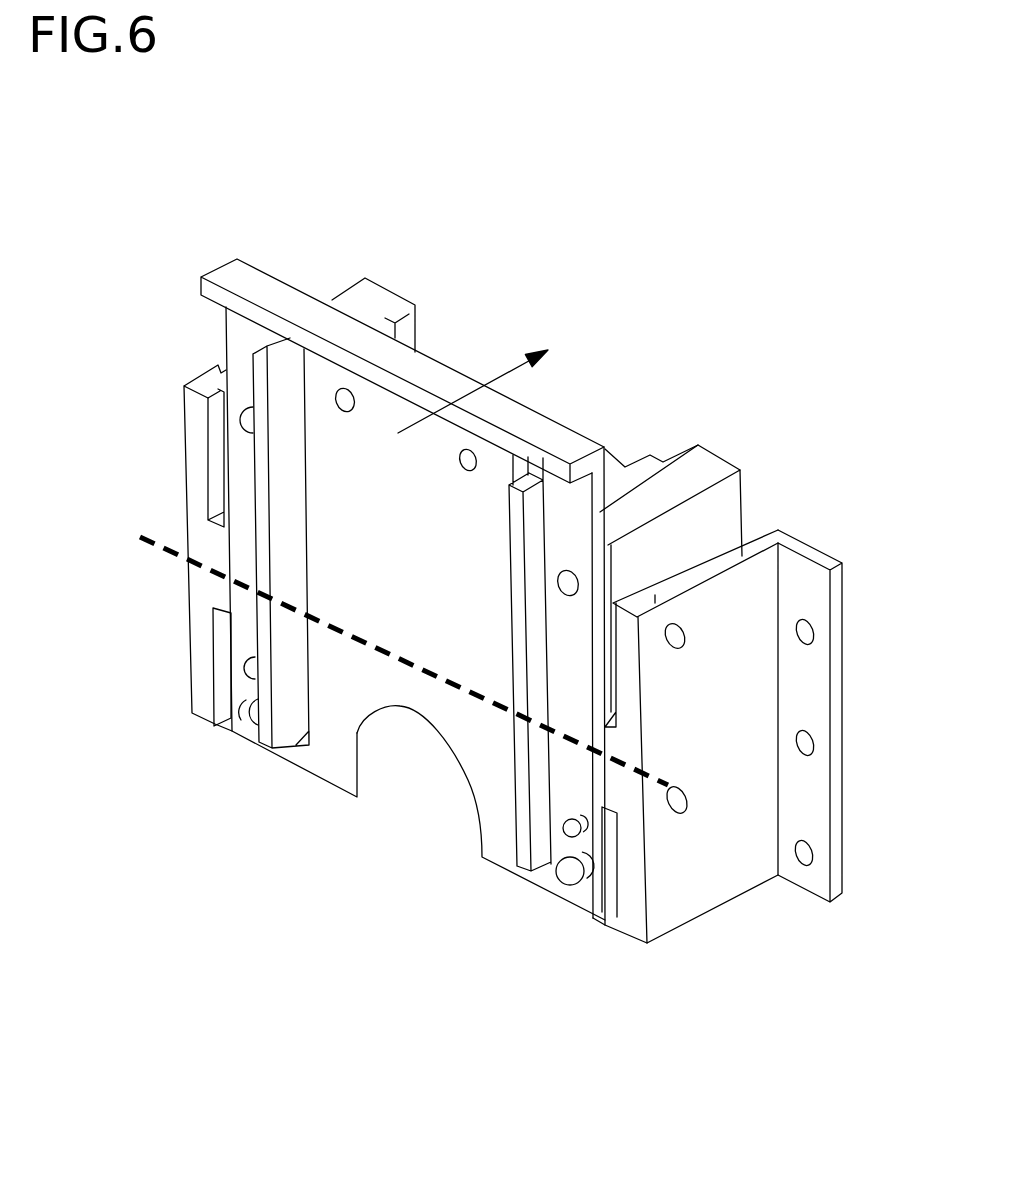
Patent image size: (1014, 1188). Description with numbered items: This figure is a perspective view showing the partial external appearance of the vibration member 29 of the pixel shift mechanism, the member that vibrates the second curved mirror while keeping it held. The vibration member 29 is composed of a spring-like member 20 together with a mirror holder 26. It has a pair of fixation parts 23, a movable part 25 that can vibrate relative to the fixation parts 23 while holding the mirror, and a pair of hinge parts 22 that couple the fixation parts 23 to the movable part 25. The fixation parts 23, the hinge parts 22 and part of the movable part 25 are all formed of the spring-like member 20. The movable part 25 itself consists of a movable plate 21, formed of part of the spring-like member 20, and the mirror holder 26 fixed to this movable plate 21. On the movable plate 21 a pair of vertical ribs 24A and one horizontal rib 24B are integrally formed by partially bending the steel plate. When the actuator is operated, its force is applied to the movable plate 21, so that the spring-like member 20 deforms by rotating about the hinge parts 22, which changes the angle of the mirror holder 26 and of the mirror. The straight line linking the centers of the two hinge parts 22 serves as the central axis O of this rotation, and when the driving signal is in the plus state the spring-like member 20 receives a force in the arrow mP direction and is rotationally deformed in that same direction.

The vibration member 29 is at (912, 306).
The spring-like member 20 is at (790, 541).
The movable plate 21 is at (704, 447).
The hinge parts 22 is at (220, 588).
The fixation parts 23 is at (192, 430).
The vertical ribs 24A is at (268, 703).
The horizontal rib 24B is at (287, 298).
The movable part 25 is at (832, 364).
The mirror holder 26 is at (722, 468).
The central axis O is at (387, 651).
The arrow mP direction mP is at (494, 375).